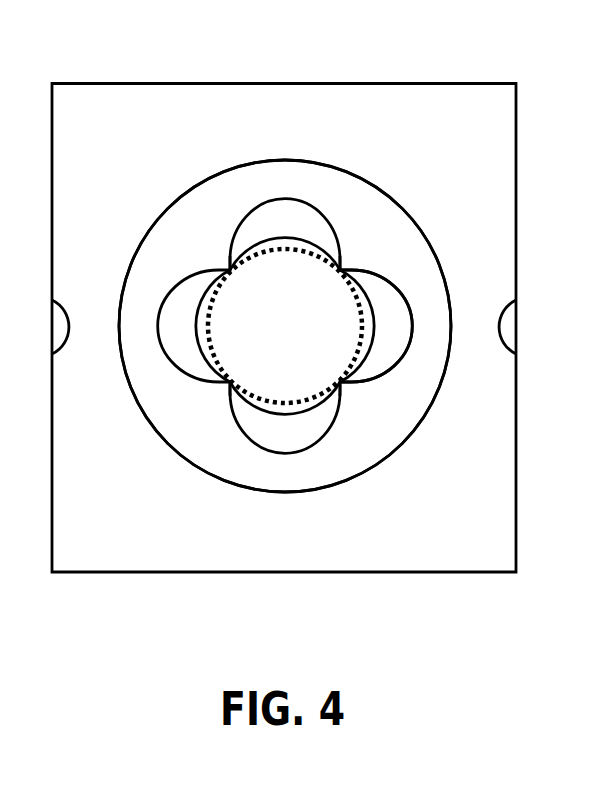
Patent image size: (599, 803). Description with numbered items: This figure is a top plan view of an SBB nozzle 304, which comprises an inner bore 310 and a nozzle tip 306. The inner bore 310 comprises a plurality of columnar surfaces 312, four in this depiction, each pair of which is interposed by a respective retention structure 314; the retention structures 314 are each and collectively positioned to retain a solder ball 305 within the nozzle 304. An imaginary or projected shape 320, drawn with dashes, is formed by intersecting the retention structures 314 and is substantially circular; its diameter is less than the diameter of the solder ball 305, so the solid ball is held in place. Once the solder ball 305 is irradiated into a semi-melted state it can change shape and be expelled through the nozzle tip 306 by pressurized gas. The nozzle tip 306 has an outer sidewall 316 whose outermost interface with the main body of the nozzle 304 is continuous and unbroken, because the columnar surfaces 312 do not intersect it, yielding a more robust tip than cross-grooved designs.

The nozzle 304 is at (500, 382).
The solder ball 305 is at (310, 238).
The nozzle tip 306 is at (167, 213).
The inner bore 310 is at (407, 325).
The columnar surfaces 312 is at (285, 198).
The retention structure 314 is at (228, 269).
The outer sidewall 316 is at (177, 412).
The projected shape 320 is at (360, 350).